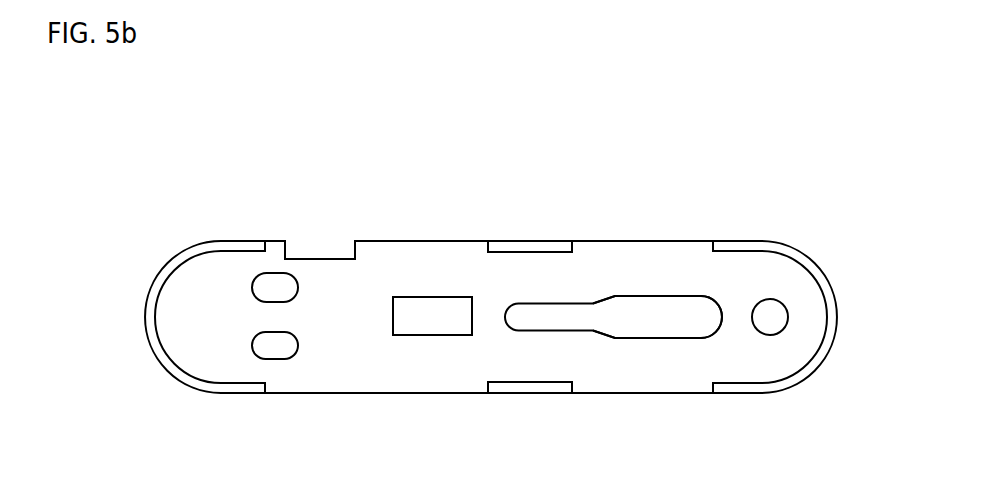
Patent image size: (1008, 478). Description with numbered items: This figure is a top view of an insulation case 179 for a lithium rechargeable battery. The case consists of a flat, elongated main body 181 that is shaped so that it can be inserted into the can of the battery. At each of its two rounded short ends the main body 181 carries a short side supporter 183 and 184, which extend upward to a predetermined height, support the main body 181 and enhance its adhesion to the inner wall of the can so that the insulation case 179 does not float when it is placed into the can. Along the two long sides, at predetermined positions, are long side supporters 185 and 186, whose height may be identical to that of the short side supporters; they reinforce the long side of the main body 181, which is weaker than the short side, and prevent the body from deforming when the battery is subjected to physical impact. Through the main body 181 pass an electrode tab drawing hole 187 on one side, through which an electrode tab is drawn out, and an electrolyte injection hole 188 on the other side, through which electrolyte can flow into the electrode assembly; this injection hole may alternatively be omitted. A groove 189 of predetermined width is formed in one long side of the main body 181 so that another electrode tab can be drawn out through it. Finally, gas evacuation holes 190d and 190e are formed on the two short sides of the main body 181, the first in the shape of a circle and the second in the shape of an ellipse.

The insulation case 179 is at (622, 176).
The main body 181 is at (625, 360).
The short side supporter 183 is at (818, 273).
The short side supporter 184 is at (167, 268).
The long side supporter 185 is at (528, 247).
The long side supporter 186 is at (532, 388).
The electrode tab drawing hole 187 is at (708, 327).
The electrolyte injection hole 188 is at (427, 324).
The groove 189 is at (322, 258).
The gas evacuation hole 190d is at (770, 315).
The gas evacuation hole 190e is at (275, 347).